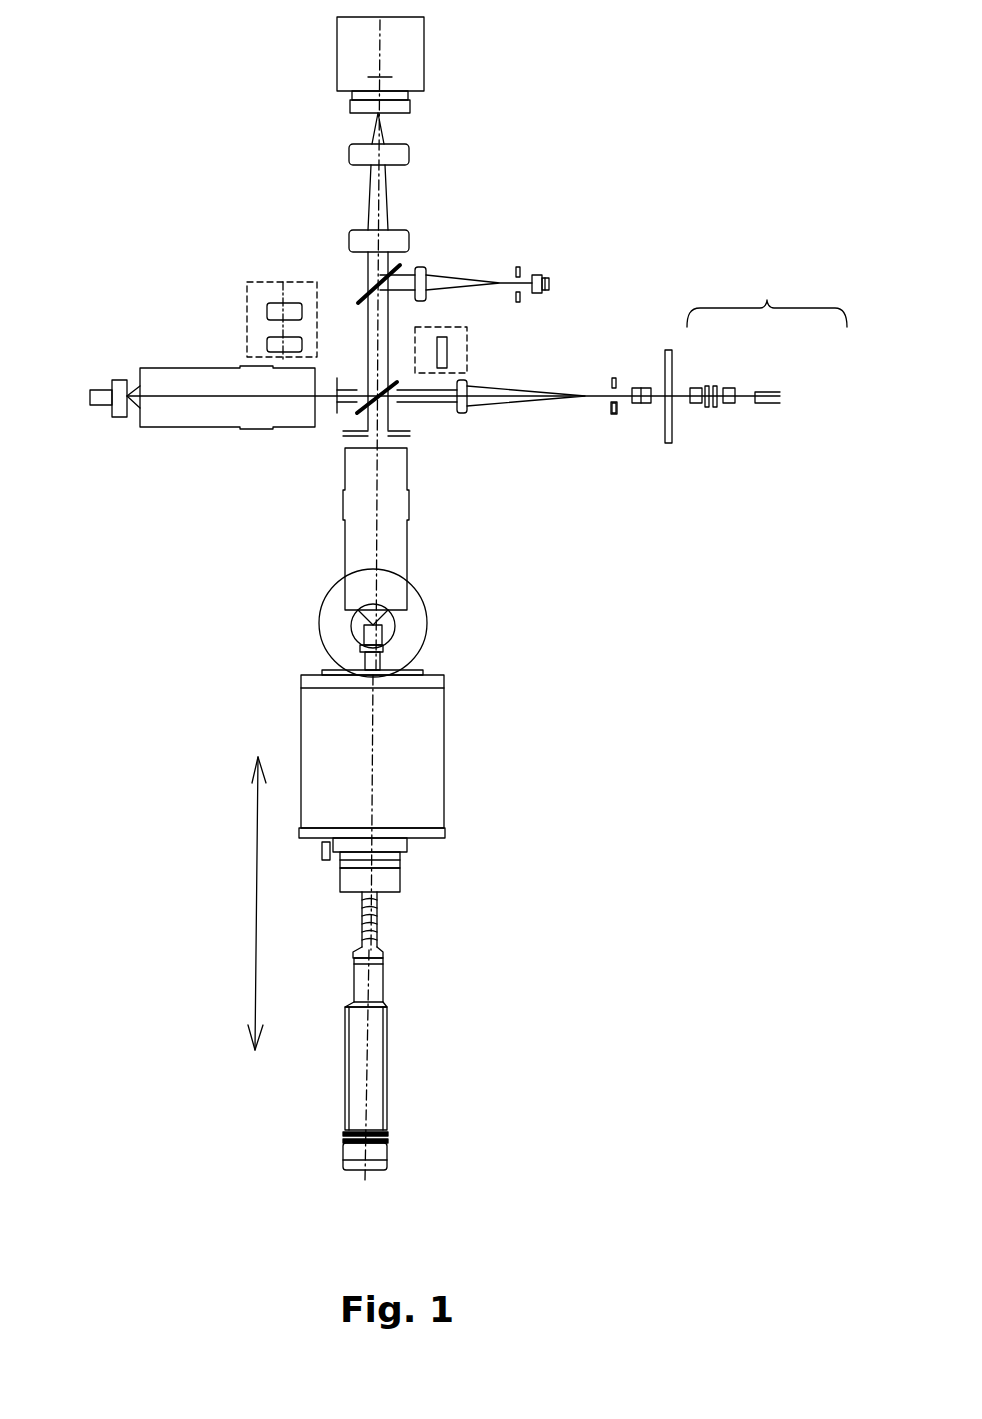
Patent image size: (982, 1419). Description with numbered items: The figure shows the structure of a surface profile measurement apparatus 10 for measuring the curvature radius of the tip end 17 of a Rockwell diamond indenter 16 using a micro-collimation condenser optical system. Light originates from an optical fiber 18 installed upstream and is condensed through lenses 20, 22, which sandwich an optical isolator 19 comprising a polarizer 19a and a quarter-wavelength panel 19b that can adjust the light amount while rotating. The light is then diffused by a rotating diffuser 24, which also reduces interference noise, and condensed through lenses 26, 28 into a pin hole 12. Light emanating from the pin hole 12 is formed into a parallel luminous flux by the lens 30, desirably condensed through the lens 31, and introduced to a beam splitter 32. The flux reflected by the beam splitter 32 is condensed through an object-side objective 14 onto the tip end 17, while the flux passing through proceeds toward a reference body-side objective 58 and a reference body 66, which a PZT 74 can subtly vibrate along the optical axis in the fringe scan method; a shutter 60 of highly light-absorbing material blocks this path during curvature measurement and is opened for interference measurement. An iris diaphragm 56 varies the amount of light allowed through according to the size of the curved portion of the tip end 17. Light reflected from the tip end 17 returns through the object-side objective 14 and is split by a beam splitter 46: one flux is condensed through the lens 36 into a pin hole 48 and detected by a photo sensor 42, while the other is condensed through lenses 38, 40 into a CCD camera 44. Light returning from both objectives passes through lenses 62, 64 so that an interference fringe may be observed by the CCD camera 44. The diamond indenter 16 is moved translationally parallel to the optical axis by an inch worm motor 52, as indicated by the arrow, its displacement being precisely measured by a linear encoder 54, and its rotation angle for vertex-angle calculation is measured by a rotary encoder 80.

The surface profile measurement apparatus 10 is at (615, 145).
The pin hole 12 is at (612, 413).
The object-side objective 14 is at (408, 547).
The diamond indenter 16 is at (383, 646).
The tip end 17 is at (380, 620).
The optical fiber 18 is at (768, 403).
The optical isolator 19 is at (767, 296).
The polarizer 19a is at (707, 386).
The λ/4 wavelength panel 19b is at (715, 386).
The lens 20 is at (728, 403).
The lens 22 is at (695, 403).
The rotating diffuser 24 is at (668, 443).
The lens 26 is at (641, 388).
The lens 28 is at (612, 378).
The lens 30 is at (462, 413).
The lens 31 is at (447, 350).
The beam splitter 32 is at (390, 381).
The lens 36 is at (428, 271).
The lens 38 is at (350, 238).
The lens 40 is at (350, 155).
The photo sensor 42 is at (534, 293).
The CCD camera 44 is at (425, 45).
The beam splitter 46 is at (366, 293).
The pin hole 48 is at (513, 267).
The inch worm motor 52 is at (445, 760).
The linear encoder 54 is at (388, 1067).
The iris diaphragm 56 is at (347, 438).
The reference body-side objective 58 is at (188, 427).
The shutter 60 is at (338, 379).
The lens 62 is at (268, 345).
The lens 64 is at (267, 311).
The reference body 66 is at (116, 379).
The PZT 74 is at (94, 405).
The rotary encoder 80 is at (320, 632).